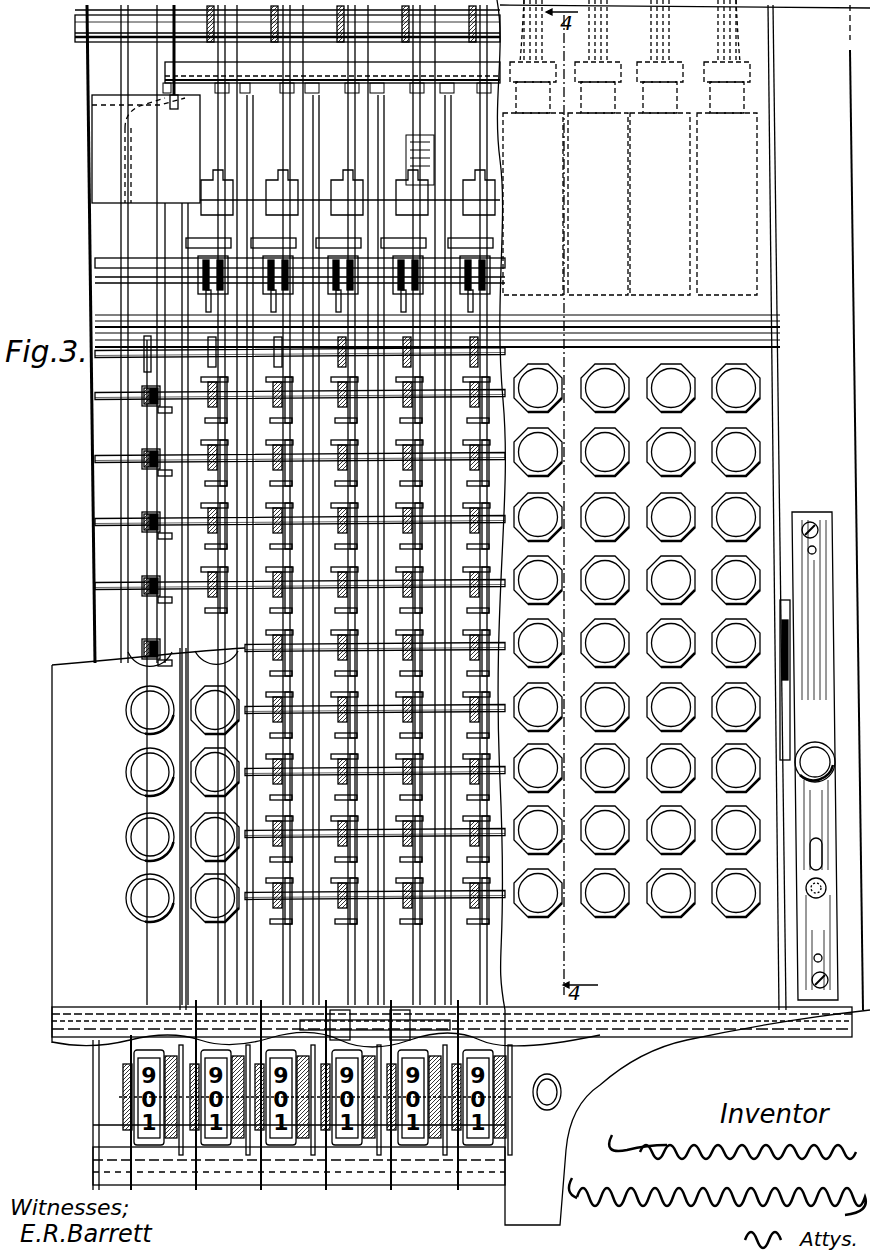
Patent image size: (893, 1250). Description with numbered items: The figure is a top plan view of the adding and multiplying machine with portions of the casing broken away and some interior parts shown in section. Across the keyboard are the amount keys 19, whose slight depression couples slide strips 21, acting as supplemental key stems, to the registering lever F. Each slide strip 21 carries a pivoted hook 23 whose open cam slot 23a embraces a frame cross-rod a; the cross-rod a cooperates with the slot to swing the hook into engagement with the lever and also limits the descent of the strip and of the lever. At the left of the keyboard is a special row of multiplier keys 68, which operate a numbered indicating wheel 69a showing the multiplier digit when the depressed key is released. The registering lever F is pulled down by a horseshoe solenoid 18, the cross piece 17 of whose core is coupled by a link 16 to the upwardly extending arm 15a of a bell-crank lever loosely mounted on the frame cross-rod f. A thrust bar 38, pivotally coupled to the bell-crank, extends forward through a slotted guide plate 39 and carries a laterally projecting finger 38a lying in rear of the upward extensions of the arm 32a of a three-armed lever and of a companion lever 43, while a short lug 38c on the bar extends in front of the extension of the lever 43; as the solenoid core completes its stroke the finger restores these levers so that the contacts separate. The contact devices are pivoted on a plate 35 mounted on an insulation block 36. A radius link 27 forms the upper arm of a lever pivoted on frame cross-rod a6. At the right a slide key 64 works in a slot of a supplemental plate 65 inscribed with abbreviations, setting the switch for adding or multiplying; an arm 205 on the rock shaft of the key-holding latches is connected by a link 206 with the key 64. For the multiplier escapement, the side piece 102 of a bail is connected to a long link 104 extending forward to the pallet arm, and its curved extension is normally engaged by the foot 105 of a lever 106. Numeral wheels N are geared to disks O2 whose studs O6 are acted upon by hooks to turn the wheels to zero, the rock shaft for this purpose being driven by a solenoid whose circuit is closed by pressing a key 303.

The upwardly extending arm of bell-crank lever 15a is at (410, 45).
The link 16 is at (716, 22).
The cross piece 17 is at (750, 62).
The horseshoe solenoid 18 is at (538, 228).
The amount keys 19 is at (760, 388).
The slide strips 21 is at (492, 912).
The hook 23 is at (190, 478).
The cam slot 23a is at (200, 560).
The radius link 27 is at (145, 402).
The upwardly extending arm of three-armed lever 32a is at (194, 200).
The plate 35 is at (270, 190).
The insulation block 36 is at (100, 163).
The thrust bar 38 is at (345, 165).
The laterally projecting finger 38a is at (185, 238).
The short finger or lug 38c is at (190, 277).
The slotted guide plate 39 is at (105, 322).
The lever 43 is at (210, 182).
The slide key 64 is at (778, 925).
The supplemental plate 65 is at (808, 512).
The multiplier keys 68 is at (145, 418).
The numbered wheel 69a is at (148, 1060).
The side piece of bail 102 is at (318, 85).
The long link 104 is at (125, 230).
The foot 105 is at (92, 98).
The lever 106 is at (125, 130).
The arm 205 is at (800, 578).
The link 206 is at (790, 690).
The key 303 is at (815, 742).
The frame cross-rods a is at (150, 460).
The frame cross-rod a6 is at (145, 370).
The frame cross-rod f is at (92, 40).
The registering lever F is at (430, 428).
The numeral wheels N is at (265, 1020).
The disks O2 is at (322, 1050).
The studs O6 is at (380, 1035).